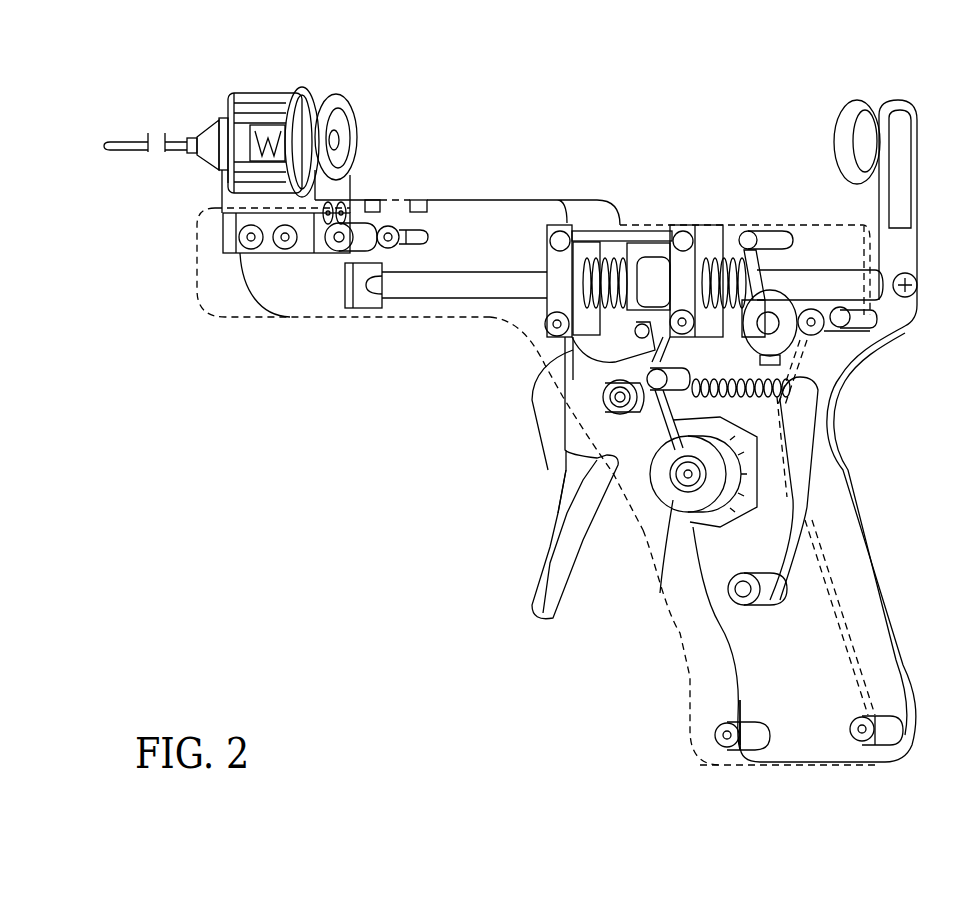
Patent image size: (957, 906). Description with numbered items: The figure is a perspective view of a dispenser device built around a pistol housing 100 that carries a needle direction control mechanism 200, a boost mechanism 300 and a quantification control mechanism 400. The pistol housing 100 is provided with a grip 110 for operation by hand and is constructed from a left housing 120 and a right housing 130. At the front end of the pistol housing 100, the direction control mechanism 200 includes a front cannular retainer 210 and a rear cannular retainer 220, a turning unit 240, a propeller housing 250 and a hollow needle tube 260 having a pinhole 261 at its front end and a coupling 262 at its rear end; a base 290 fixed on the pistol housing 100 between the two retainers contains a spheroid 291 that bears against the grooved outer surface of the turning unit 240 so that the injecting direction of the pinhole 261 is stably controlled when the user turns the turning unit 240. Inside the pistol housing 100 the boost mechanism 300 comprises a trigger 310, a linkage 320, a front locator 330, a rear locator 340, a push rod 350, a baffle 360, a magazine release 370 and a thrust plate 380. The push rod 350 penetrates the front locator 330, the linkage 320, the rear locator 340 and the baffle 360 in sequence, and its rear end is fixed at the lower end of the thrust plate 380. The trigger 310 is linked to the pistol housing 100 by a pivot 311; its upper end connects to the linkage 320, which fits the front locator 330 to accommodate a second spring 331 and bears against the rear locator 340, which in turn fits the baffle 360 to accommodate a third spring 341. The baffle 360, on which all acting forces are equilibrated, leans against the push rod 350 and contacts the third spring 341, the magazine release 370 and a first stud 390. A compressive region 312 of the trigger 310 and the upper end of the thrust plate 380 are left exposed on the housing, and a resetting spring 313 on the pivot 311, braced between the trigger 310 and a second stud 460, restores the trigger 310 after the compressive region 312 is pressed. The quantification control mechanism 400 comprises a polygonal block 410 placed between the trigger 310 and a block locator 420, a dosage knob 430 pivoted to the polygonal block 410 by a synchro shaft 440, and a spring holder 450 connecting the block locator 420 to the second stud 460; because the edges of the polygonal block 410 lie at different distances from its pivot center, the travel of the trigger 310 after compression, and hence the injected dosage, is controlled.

The pistol housing 100 is at (622, 745).
The grip 110 is at (727, 640).
The left housing 120 is at (885, 762).
The right housing 130 is at (712, 767).
The needle direction control mechanism 200 is at (107, 18).
The front cannular retainer 210 is at (232, 93).
The rear cannular retainer 220 is at (325, 108).
The turning unit 240 is at (273, 93).
The propeller housing 250 is at (318, 88).
The needle tube 260 is at (160, 84).
The pinhole 261 is at (130, 147).
The coupling 262 is at (214, 134).
The base 290 is at (197, 216).
The spheroid 291 is at (270, 192).
The boost mechanism 300 is at (853, 77).
The trigger 310 is at (580, 445).
The pivot 311 is at (607, 400).
The compressive region 312 is at (565, 480).
The resetting spring 313 is at (530, 355).
The linkage 320 is at (650, 243).
The front locator 330 is at (570, 228).
The second spring 331 is at (617, 228).
The rear locator 340 is at (693, 232).
The third spring 341 is at (722, 235).
The push rod 350 is at (496, 285).
The baffle 360 is at (740, 250).
The magazine release 370 is at (776, 300).
The thrust plate 380 is at (850, 115).
The first stud 390 is at (765, 235).
The quantification control mechanism 400 is at (527, 503).
The polygonal block 410 is at (665, 583).
The block locator 420 is at (680, 632).
The dosage knob 430 is at (663, 547).
The synchro shaft 440 is at (655, 516).
The spring holder 450 is at (827, 417).
The second stud 460 is at (760, 575).